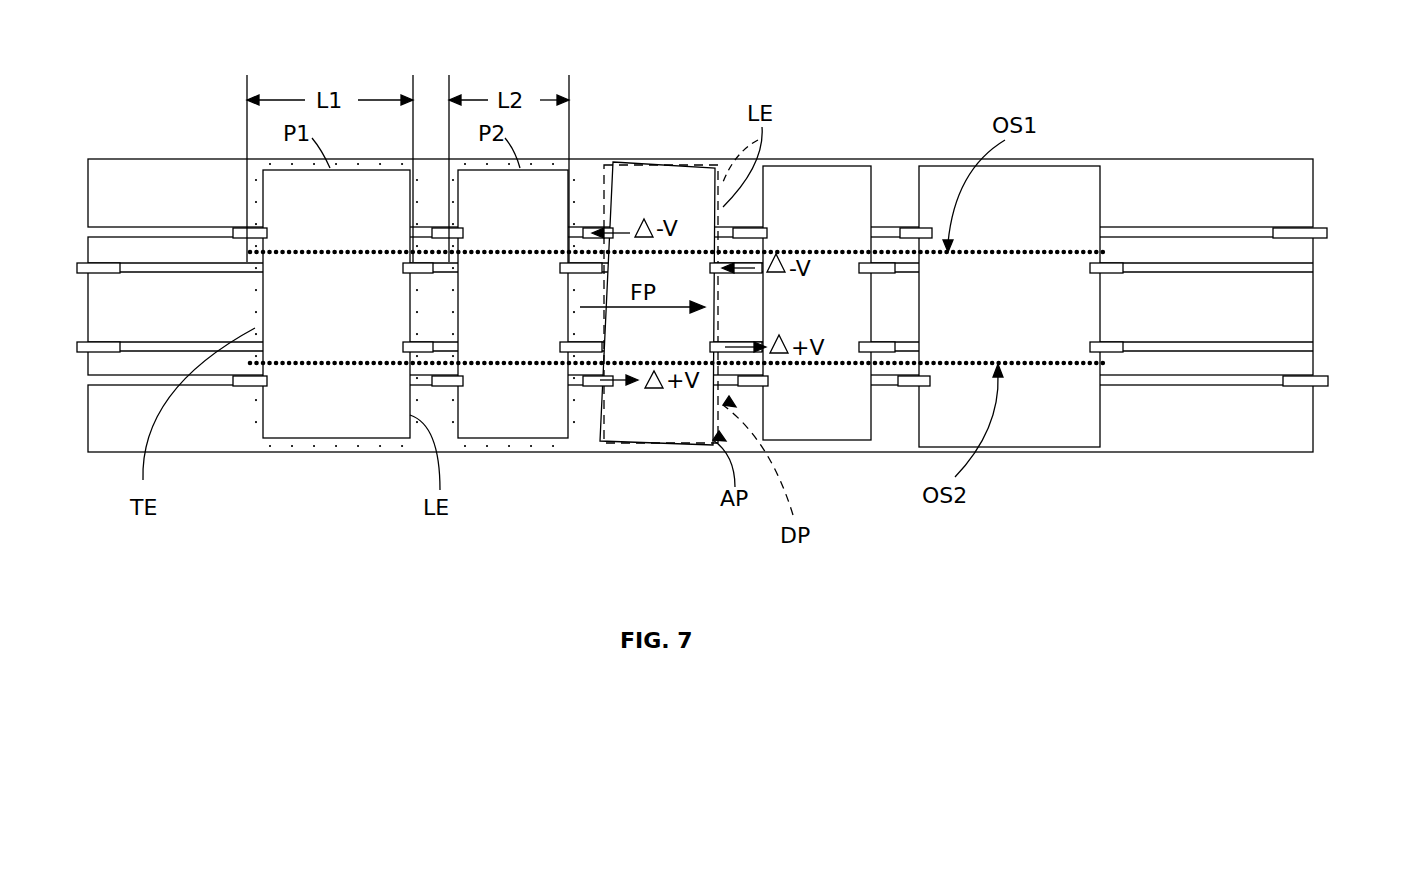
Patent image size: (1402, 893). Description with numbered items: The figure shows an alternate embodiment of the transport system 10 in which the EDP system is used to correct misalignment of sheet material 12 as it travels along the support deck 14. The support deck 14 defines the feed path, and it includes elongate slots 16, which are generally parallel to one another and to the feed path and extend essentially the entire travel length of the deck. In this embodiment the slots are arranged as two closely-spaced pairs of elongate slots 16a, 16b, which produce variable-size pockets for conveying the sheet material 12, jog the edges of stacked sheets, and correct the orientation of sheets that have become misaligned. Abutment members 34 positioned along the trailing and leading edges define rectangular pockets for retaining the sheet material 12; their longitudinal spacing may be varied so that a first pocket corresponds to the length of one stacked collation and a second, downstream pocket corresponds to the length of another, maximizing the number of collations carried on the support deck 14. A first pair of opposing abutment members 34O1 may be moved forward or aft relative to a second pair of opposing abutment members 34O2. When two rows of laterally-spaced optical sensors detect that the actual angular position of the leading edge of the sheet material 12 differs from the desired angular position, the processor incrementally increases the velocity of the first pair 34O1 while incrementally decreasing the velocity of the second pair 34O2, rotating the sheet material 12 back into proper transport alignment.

The transport system 10 is at (883, 92).
The sheet material 12 is at (300, 430).
The support deck 14 is at (160, 212).
The elongate slots 16 is at (700, 222).
The first pair of elongate slots 16a is at (1157, 268).
The second pair of elongate slots 16b is at (1213, 380).
The abutment members 34 is at (107, 273).
The first pair of opposing abutment members 34O1 is at (723, 353).
The second pair of opposing abutment members 34O2 is at (720, 262).